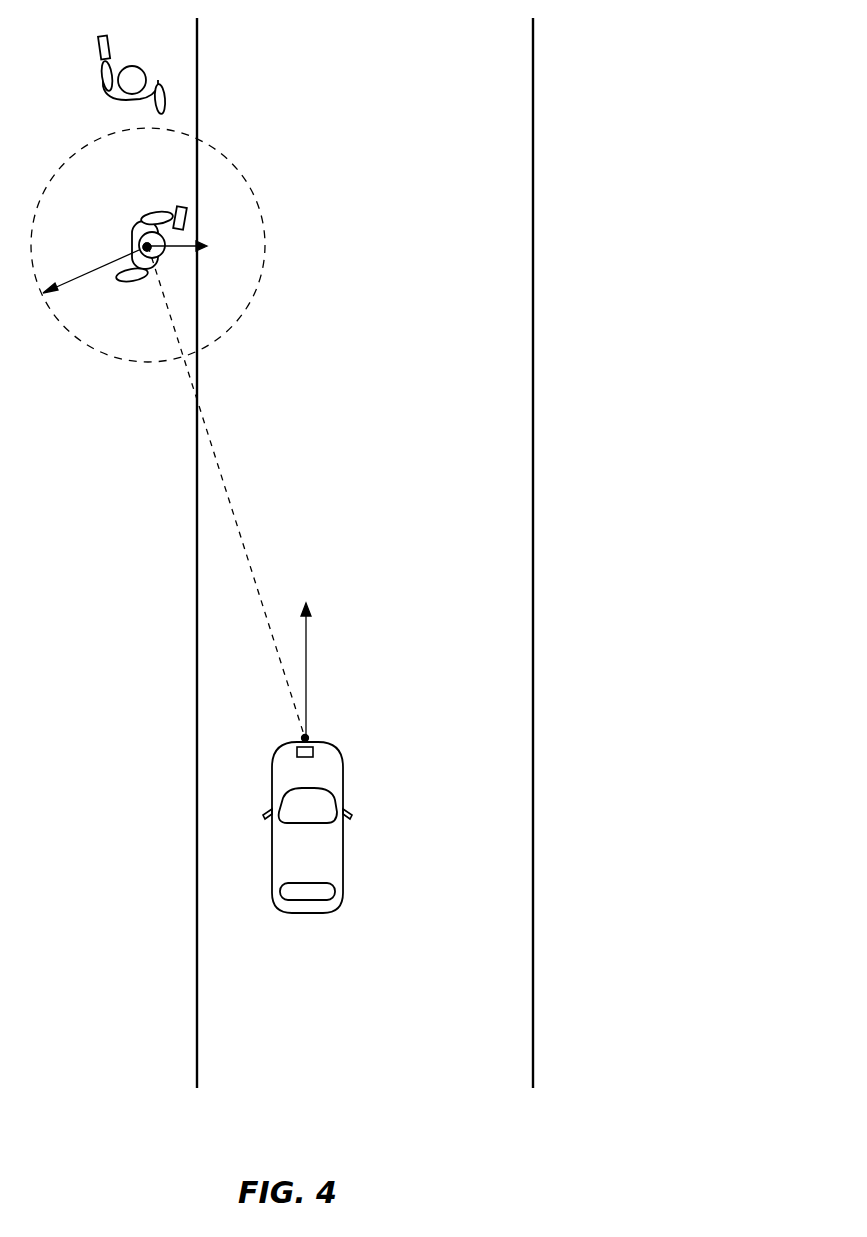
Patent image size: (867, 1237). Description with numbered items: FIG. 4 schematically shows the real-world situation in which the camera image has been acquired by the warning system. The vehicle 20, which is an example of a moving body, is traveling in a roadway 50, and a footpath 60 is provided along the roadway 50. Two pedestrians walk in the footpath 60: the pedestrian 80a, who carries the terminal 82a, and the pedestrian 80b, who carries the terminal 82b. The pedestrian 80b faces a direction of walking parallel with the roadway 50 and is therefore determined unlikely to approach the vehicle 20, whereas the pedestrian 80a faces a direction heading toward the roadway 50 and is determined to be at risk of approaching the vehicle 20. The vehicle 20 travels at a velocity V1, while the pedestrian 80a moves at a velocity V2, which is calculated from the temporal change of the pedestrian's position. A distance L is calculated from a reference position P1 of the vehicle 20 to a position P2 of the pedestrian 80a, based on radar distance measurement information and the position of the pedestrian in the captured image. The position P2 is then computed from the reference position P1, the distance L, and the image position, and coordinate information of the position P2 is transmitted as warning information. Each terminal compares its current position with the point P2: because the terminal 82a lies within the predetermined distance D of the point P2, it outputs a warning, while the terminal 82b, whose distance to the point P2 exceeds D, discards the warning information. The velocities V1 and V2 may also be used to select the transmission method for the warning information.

The vehicle 20 is at (311, 913).
The roadway 50 is at (277, 1031).
The footpath 60 is at (123, 1031).
The pedestrian 80a is at (132, 247).
The pedestrian 80b is at (98, 72).
The terminal 82a is at (177, 208).
The terminal 82b is at (101, 35).
The reference position P1 is at (302, 737).
The position P2 is at (146, 244).
The velocity V1 is at (323, 670).
The velocity V2 is at (195, 247).
The predetermined distance D is at (148, 245).
The distance L is at (226, 492).